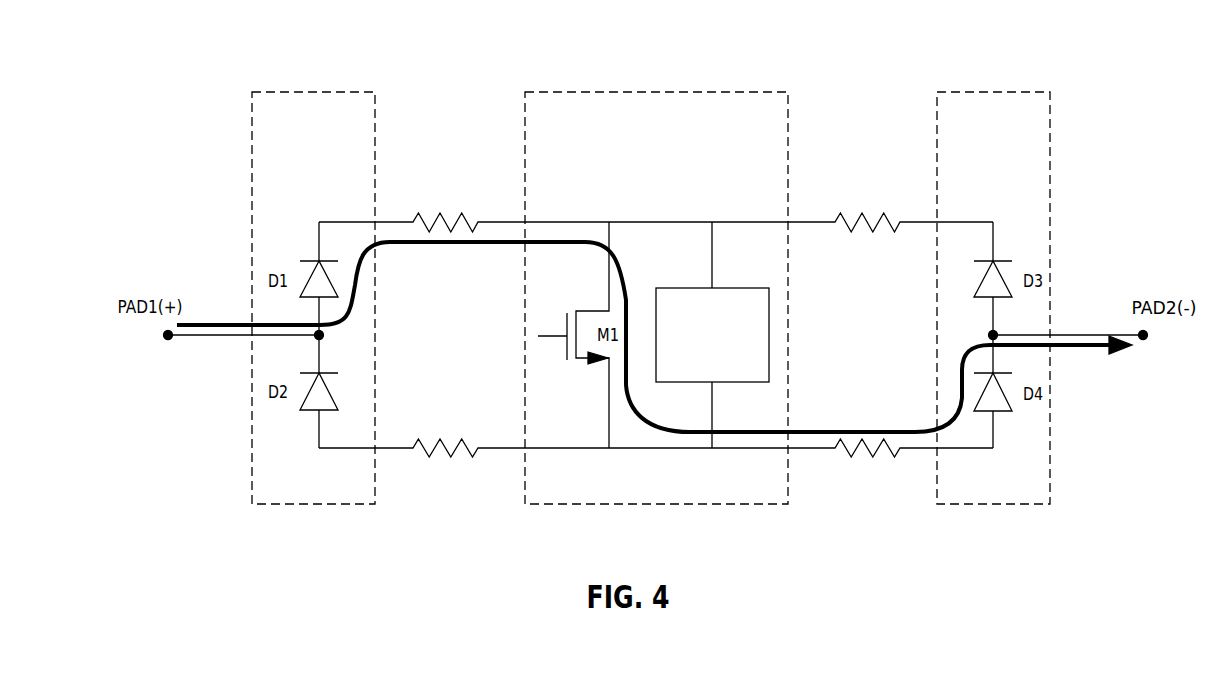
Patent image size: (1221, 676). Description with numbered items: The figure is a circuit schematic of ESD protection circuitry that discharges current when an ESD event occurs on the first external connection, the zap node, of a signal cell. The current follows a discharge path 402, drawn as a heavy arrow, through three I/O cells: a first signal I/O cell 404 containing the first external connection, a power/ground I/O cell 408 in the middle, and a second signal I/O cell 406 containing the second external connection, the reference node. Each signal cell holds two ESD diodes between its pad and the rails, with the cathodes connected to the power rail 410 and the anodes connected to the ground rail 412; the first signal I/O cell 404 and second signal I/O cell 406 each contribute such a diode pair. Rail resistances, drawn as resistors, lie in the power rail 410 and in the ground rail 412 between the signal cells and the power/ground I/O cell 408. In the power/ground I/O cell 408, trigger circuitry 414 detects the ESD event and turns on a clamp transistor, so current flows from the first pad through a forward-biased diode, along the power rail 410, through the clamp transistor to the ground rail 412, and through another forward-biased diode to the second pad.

The discharge path 402 is at (491, 243).
The first signal I/O cell 404 is at (292, 92).
The second signal I/O cell 406 is at (995, 92).
The power/ground I/O cell 408 is at (667, 92).
The power rail 410 is at (357, 222).
The ground rail 412 is at (357, 448).
The trigger circuitry 414 is at (727, 319).